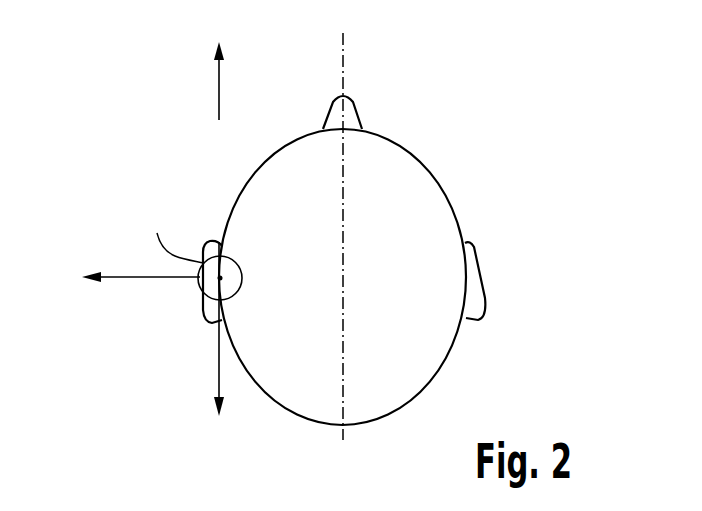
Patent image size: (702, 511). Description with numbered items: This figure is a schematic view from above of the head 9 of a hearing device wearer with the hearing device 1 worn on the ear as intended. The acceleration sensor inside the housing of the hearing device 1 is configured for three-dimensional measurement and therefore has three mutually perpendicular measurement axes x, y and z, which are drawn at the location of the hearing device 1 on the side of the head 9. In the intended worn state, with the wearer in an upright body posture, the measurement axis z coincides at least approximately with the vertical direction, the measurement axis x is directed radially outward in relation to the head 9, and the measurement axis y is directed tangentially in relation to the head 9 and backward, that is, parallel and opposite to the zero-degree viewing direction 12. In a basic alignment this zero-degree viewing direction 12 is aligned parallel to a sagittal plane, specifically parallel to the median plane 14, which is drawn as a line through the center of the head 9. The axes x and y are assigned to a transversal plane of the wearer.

The hearing device 1 is at (209, 332).
The head 9 is at (166, 160).
The zero-degree viewing direction 12 is at (219, 83).
The median plane 14 is at (343, 50).